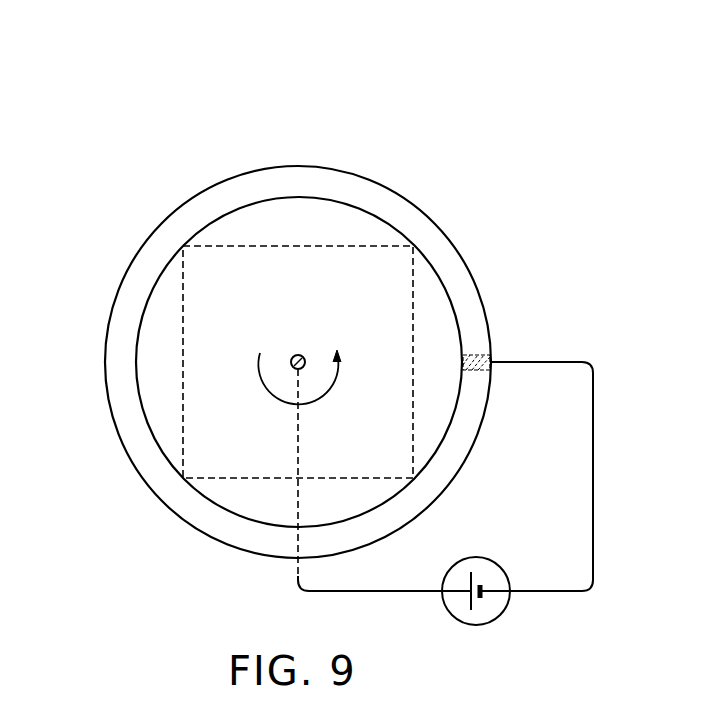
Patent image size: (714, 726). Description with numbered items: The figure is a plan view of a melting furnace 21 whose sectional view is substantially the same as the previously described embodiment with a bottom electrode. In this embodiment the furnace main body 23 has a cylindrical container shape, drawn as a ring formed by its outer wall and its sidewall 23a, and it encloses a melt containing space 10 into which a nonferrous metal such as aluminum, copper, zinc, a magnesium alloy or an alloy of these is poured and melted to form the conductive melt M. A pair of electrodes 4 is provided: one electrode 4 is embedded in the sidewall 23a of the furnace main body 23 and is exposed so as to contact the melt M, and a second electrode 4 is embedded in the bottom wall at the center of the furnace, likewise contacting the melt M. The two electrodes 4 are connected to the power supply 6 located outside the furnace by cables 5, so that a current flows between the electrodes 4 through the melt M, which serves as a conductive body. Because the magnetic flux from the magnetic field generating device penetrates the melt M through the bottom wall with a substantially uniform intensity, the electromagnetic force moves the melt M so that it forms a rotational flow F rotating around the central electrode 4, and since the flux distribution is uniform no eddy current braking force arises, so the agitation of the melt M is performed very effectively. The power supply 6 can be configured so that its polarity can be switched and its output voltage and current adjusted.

The melting furnace 21 is at (280, 150).
The furnace main body 23 is at (397, 193).
The sidewall 23a is at (327, 183).
The melt containing space 10 is at (152, 252).
The melt M is at (152, 355).
The electrode 4 is at (298, 354).
The rotational flow F is at (332, 380).
The cable 5 is at (405, 593).
The power supply 6 is at (502, 573).